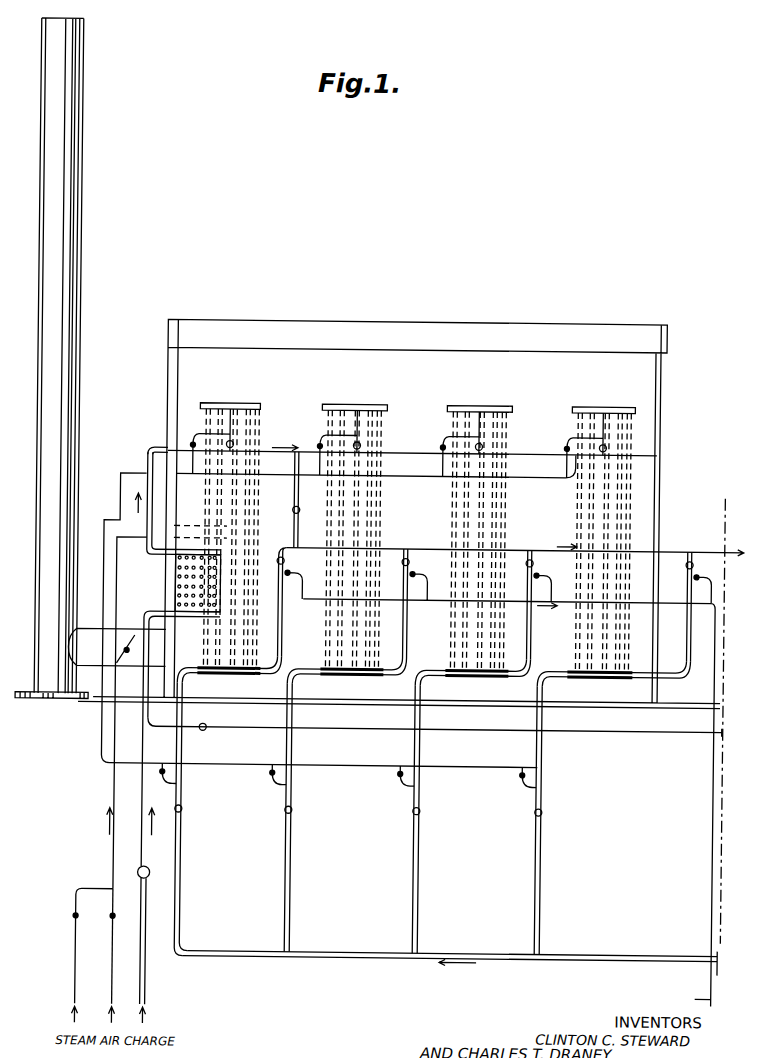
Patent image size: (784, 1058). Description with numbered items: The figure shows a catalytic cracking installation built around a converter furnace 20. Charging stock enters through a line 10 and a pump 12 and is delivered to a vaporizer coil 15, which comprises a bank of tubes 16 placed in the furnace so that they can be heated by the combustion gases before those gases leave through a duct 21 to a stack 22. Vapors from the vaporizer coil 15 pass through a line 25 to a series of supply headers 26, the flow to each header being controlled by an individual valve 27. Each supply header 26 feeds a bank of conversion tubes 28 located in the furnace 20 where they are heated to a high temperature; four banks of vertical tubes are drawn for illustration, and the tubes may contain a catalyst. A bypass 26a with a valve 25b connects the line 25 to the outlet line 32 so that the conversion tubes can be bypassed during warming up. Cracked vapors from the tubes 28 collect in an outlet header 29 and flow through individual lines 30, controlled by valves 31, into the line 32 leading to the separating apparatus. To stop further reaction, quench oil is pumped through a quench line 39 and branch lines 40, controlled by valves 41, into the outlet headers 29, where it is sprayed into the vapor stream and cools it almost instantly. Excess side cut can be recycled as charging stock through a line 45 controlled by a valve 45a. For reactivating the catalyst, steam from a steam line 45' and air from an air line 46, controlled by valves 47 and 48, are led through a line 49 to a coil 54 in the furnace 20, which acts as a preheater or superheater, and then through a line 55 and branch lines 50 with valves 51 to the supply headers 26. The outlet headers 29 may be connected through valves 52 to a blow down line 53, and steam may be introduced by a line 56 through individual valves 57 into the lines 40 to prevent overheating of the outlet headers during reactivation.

The line 10 is at (151, 938).
The pump 12 is at (152, 871).
The vaporizer coil 15 is at (176, 584).
The tubes 16 is at (200, 619).
The converter furnace 20 is at (401, 513).
The duct 21 is at (84, 630).
The stack 22 is at (78, 484).
The line 25 is at (152, 503).
The valve 25b is at (300, 512).
The supply headers 26 is at (262, 406).
The connecting pipe 26a is at (298, 494).
The valve 27 is at (233, 445).
The conversion tubes 28 is at (254, 504).
The outlet header 29 is at (228, 676).
The lines 30 is at (281, 630).
The valves 31 is at (279, 558).
The line 32 is at (517, 549).
The quench line 39 is at (570, 952).
The branch lines 40 is at (179, 746).
The valves 41 is at (185, 811).
The line 45 is at (434, 738).
The steam line 45' is at (76, 946).
The valve 45a is at (205, 733).
The air line 46 is at (117, 976).
The valve 47 is at (78, 919).
The valve 48 is at (116, 919).
The line 49 is at (117, 587).
The branch lines 50 is at (193, 468).
The valves 51 is at (191, 444).
The valves 52 is at (291, 575).
The blow down line 53 is at (716, 690).
The coil 54 is at (188, 526).
The line 55 is at (128, 475).
The line 56 is at (104, 742).
The valves 57 is at (165, 777).